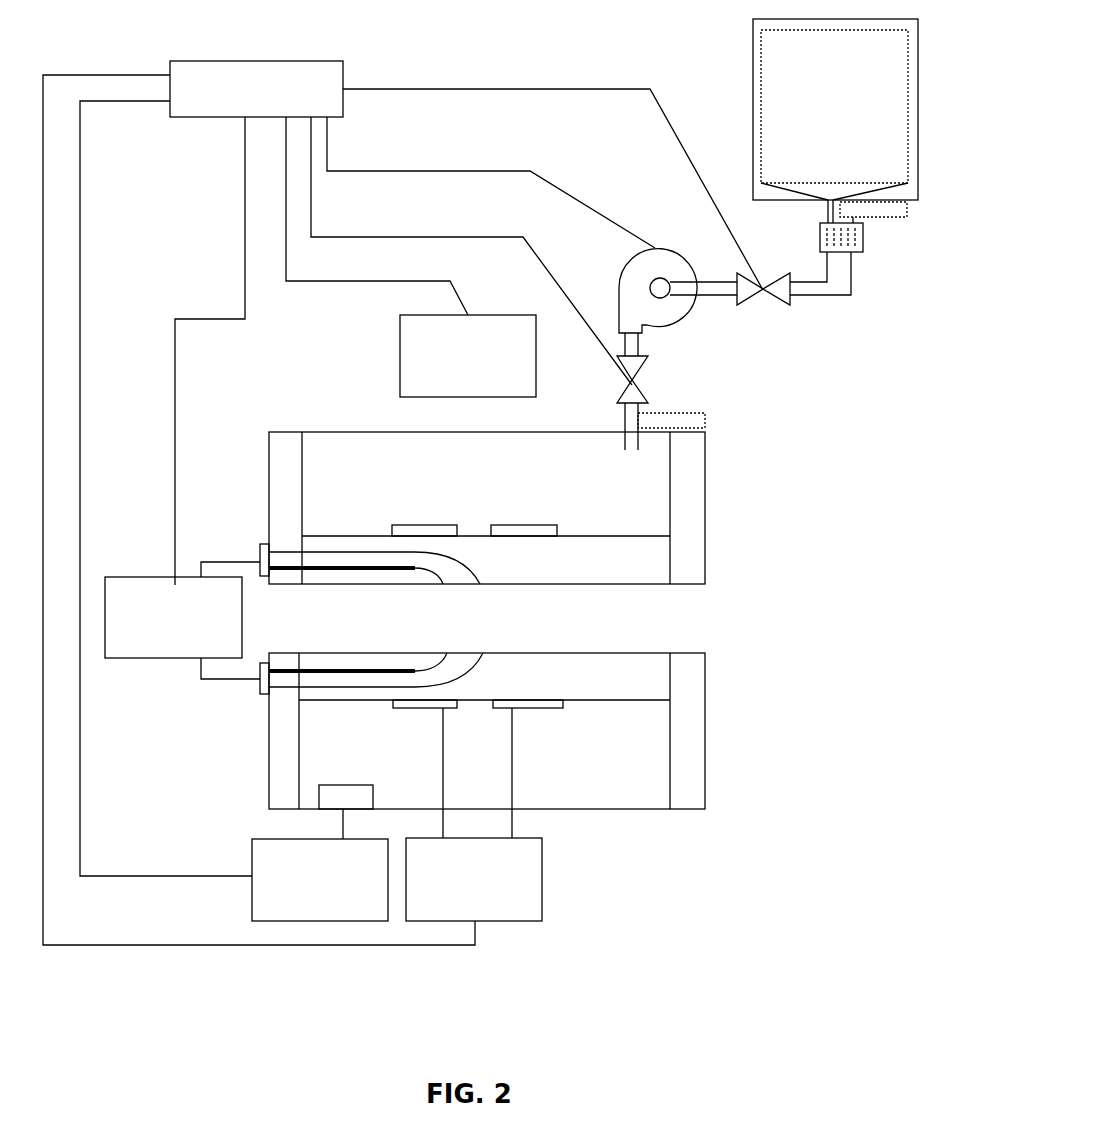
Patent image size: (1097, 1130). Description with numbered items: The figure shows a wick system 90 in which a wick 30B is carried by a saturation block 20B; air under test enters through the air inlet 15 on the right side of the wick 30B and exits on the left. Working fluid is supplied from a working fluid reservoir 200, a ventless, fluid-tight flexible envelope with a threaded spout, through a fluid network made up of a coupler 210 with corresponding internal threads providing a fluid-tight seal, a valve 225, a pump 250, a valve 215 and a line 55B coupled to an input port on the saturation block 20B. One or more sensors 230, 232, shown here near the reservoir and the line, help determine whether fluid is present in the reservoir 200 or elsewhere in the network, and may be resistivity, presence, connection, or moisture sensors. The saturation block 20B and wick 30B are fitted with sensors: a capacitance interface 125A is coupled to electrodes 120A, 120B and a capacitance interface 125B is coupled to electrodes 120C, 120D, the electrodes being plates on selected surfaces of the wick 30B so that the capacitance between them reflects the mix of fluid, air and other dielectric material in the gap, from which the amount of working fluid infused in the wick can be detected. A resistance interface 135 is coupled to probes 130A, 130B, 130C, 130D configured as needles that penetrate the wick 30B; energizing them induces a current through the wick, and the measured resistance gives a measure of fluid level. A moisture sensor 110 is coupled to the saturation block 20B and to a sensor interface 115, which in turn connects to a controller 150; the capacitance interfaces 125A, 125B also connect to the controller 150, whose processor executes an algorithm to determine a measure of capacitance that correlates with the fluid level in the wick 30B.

The air inlet 15 is at (693, 610).
The saturation block 20B is at (593, 809).
The wick 30B is at (585, 584).
The line 55B is at (628, 430).
The wick system 90 is at (853, 581).
The moisture sensor 110 is at (337, 785).
The sensor interface 115 is at (268, 839).
The electrode 120A is at (432, 525).
The electrode 120B is at (540, 525).
The electrode 120C is at (417, 708).
The electrode 120D is at (533, 709).
The capacitance interface 125A is at (401, 357).
The capacitance interface 125B is at (542, 878).
The probe 130A is at (443, 584).
The probe 130B is at (480, 584).
The probe 130C is at (483, 653).
The probe 130D is at (447, 653).
The resistance interface 135 is at (170, 577).
The controller 150 is at (222, 117).
The working fluid reservoir 200 is at (753, 67).
The coupler 210 is at (857, 252).
The valve 215 is at (641, 388).
The valve 225 is at (748, 303).
The sensor 230 is at (905, 218).
The sensor 232 is at (705, 417).
The pump 250 is at (674, 325).